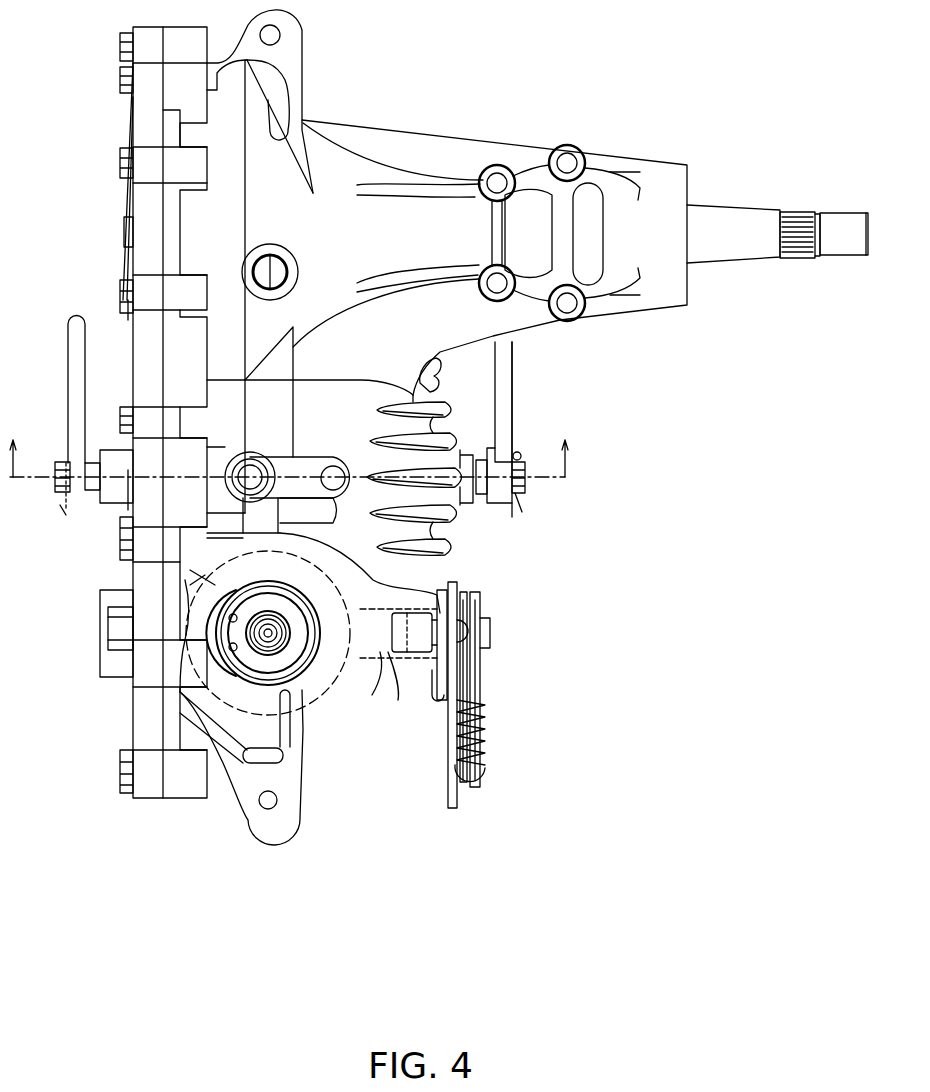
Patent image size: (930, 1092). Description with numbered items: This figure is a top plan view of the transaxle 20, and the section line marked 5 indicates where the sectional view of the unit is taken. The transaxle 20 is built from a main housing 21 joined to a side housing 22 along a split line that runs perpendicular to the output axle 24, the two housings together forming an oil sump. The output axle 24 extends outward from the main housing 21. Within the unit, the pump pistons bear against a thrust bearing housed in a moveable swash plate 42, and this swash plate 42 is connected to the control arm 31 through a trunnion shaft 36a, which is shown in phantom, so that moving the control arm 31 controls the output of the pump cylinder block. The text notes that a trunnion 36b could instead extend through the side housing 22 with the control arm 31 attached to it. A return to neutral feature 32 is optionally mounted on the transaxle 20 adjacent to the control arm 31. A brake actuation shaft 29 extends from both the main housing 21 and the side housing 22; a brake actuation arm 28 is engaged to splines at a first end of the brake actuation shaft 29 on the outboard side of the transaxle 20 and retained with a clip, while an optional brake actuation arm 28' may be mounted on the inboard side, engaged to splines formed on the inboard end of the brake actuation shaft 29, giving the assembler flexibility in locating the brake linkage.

The transaxle 20 is at (682, 60).
The main housing 21 is at (433, 130).
The side housing 22 is at (146, 124).
The output axle 24 is at (754, 242).
The brake actuation arm 28 is at (516, 429).
The brake actuation arm 28' is at (80, 409).
The brake actuation shaft 29 is at (56, 486).
The control arm 31 is at (451, 808).
The return to neutral feature 32 is at (505, 705).
The trunnion shaft 36a is at (425, 658).
The trunnion 36b is at (148, 655).
The moveable swash plate 42 is at (330, 703).
The section line 5- 5 is at (288, 441).